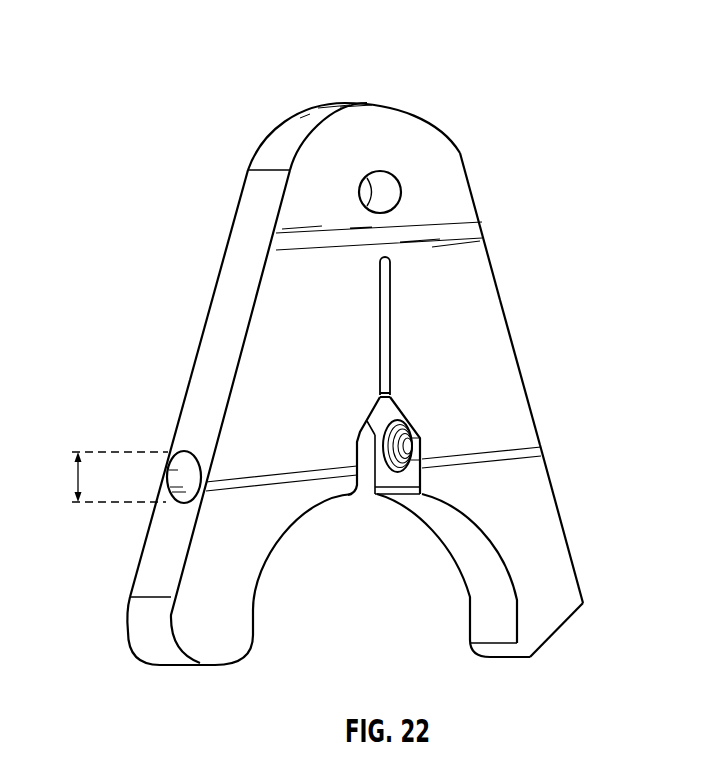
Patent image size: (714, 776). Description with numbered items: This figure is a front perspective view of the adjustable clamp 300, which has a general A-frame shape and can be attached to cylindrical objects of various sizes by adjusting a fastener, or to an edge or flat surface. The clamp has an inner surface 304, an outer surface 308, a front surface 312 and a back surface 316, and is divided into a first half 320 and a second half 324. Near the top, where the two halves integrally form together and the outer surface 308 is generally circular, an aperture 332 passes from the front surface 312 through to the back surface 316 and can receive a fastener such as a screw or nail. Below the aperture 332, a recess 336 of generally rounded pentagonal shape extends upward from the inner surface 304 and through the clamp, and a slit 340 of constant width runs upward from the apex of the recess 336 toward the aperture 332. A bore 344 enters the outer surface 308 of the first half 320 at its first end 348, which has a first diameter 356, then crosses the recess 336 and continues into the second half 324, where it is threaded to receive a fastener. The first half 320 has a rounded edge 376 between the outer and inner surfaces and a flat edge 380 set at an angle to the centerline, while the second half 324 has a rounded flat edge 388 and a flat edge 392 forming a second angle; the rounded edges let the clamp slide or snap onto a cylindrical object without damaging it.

The adjustable clamp 300 is at (157, 61).
The inner surface 304 is at (447, 557).
The outer surface 308 is at (209, 259).
The front surface 312 is at (482, 276).
The back surface 316 is at (245, 187).
The first half 320 is at (185, 365).
The second half 324 is at (566, 483).
The aperture 332 is at (402, 190).
The recess 336 is at (367, 506).
The slit 340 is at (392, 362).
The bore 344 is at (170, 497).
The first end 348 is at (168, 452).
The first diameter 356 is at (76, 474).
The rounded edge 376 is at (216, 666).
The flat edge 380 is at (212, 315).
The rounded flat edge 388 is at (561, 634).
The flat edge 392 is at (533, 397).